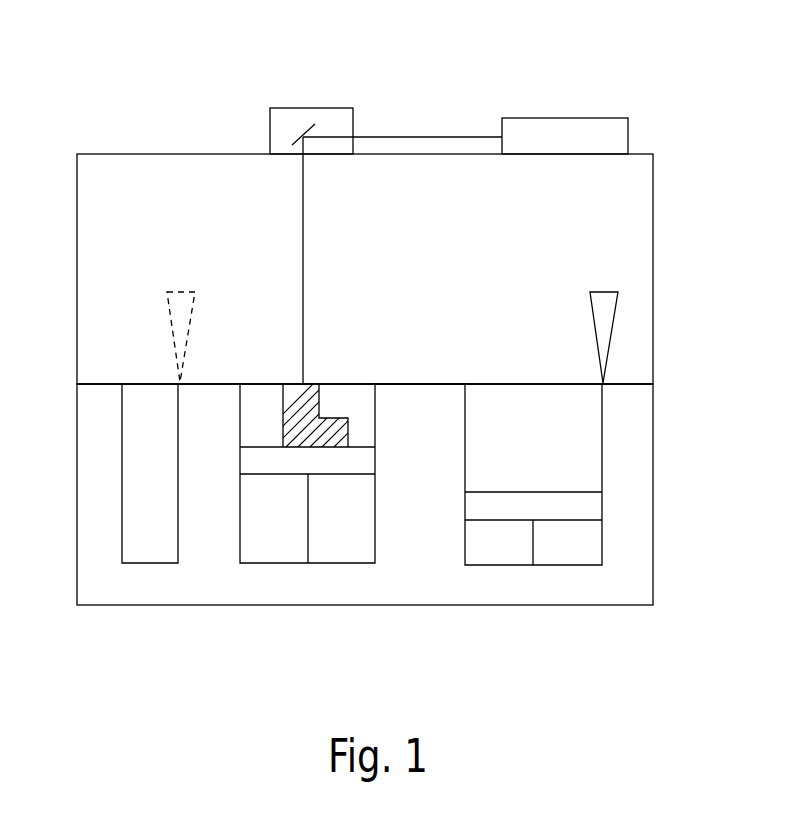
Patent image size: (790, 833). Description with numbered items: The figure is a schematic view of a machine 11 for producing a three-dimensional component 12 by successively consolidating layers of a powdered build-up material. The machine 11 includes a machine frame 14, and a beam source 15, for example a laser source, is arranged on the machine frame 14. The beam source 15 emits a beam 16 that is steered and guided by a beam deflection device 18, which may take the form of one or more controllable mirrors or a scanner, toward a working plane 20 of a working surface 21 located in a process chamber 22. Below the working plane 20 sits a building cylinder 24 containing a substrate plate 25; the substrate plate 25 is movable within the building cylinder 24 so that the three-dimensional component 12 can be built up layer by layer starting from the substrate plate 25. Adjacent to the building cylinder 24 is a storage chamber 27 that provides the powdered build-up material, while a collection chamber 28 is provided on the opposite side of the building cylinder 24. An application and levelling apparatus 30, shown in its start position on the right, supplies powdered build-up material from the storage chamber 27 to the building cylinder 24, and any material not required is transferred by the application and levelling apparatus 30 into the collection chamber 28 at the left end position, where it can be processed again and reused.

The machine 11 is at (450, 80).
The three-dimensional component 12 is at (316, 376).
The machine frame 14 is at (655, 525).
The beam source 15 is at (591, 138).
The beam 16 is at (302, 242).
The beam deflection device 18 is at (292, 118).
The working plane 20 is at (452, 384).
The working surface 21 is at (412, 378).
The process chamber 22 is at (177, 190).
The building cylinder 24 is at (382, 505).
The substrate plate 25 is at (249, 460).
The storage chamber 27 is at (575, 455).
The collection chamber 28 is at (152, 505).
The application and levelling apparatus 30 is at (175, 307).